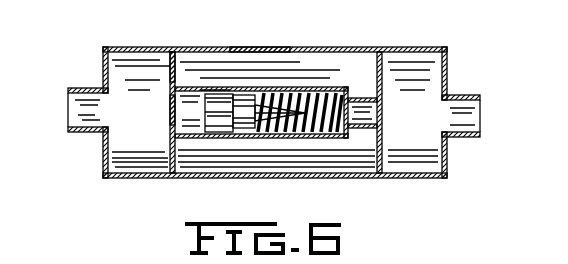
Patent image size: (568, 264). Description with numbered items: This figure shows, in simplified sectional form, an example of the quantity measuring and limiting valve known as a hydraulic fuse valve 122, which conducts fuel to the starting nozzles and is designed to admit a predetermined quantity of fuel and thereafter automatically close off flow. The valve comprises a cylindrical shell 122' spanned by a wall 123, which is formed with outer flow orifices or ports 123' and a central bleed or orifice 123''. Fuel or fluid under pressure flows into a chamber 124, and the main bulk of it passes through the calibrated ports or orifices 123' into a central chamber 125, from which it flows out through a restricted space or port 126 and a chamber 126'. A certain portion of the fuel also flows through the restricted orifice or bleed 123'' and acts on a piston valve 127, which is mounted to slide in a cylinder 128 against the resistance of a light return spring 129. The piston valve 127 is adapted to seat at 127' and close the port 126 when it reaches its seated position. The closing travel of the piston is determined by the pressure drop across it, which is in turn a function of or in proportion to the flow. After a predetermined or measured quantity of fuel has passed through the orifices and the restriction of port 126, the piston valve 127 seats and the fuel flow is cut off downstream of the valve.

The hydraulic fuse valve 122 is at (292, 95).
The cylindrical shell 122' is at (260, 28).
The wall 123 is at (127, 132).
The outer flow orifices 123' is at (161, 49).
The central bleed orifice 123'' is at (145, 113).
The chamber 124 is at (118, 67).
The central chamber 125 is at (288, 67).
The restricted port 126 is at (373, 98).
The chamber 126' is at (460, 102).
The piston valve 127 is at (237, 153).
The seat 127' is at (389, 125).
The cylinder 128 is at (190, 88).
The light return spring 129 is at (312, 122).